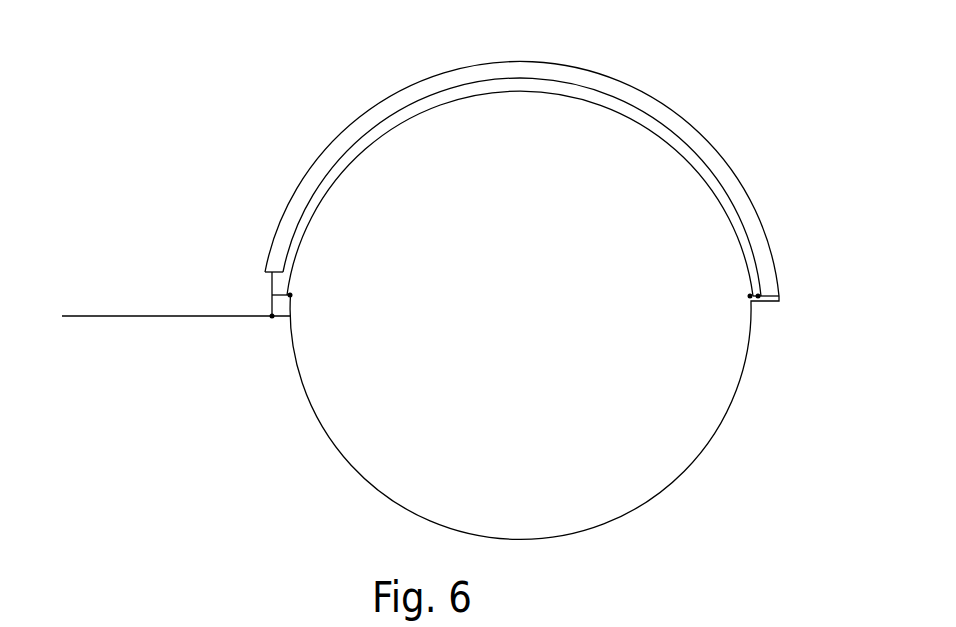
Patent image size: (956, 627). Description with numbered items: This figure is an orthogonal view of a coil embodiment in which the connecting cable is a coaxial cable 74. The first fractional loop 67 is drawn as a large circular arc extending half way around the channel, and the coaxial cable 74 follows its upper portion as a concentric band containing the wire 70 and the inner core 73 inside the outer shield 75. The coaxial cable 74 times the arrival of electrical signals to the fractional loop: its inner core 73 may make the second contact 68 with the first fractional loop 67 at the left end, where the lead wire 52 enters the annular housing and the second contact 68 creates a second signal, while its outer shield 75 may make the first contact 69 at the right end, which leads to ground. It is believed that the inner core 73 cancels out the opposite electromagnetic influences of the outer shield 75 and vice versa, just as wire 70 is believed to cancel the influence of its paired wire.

The lead wire 52 is at (118, 318).
The first fractional loop 67 is at (701, 460).
The second contact 68 is at (272, 317).
The first contact 69 is at (748, 296).
The wire 70 is at (609, 105).
The inner core 73 is at (264, 277).
The coaxial cable 74 is at (342, 99).
The outer shield 75 is at (724, 160).